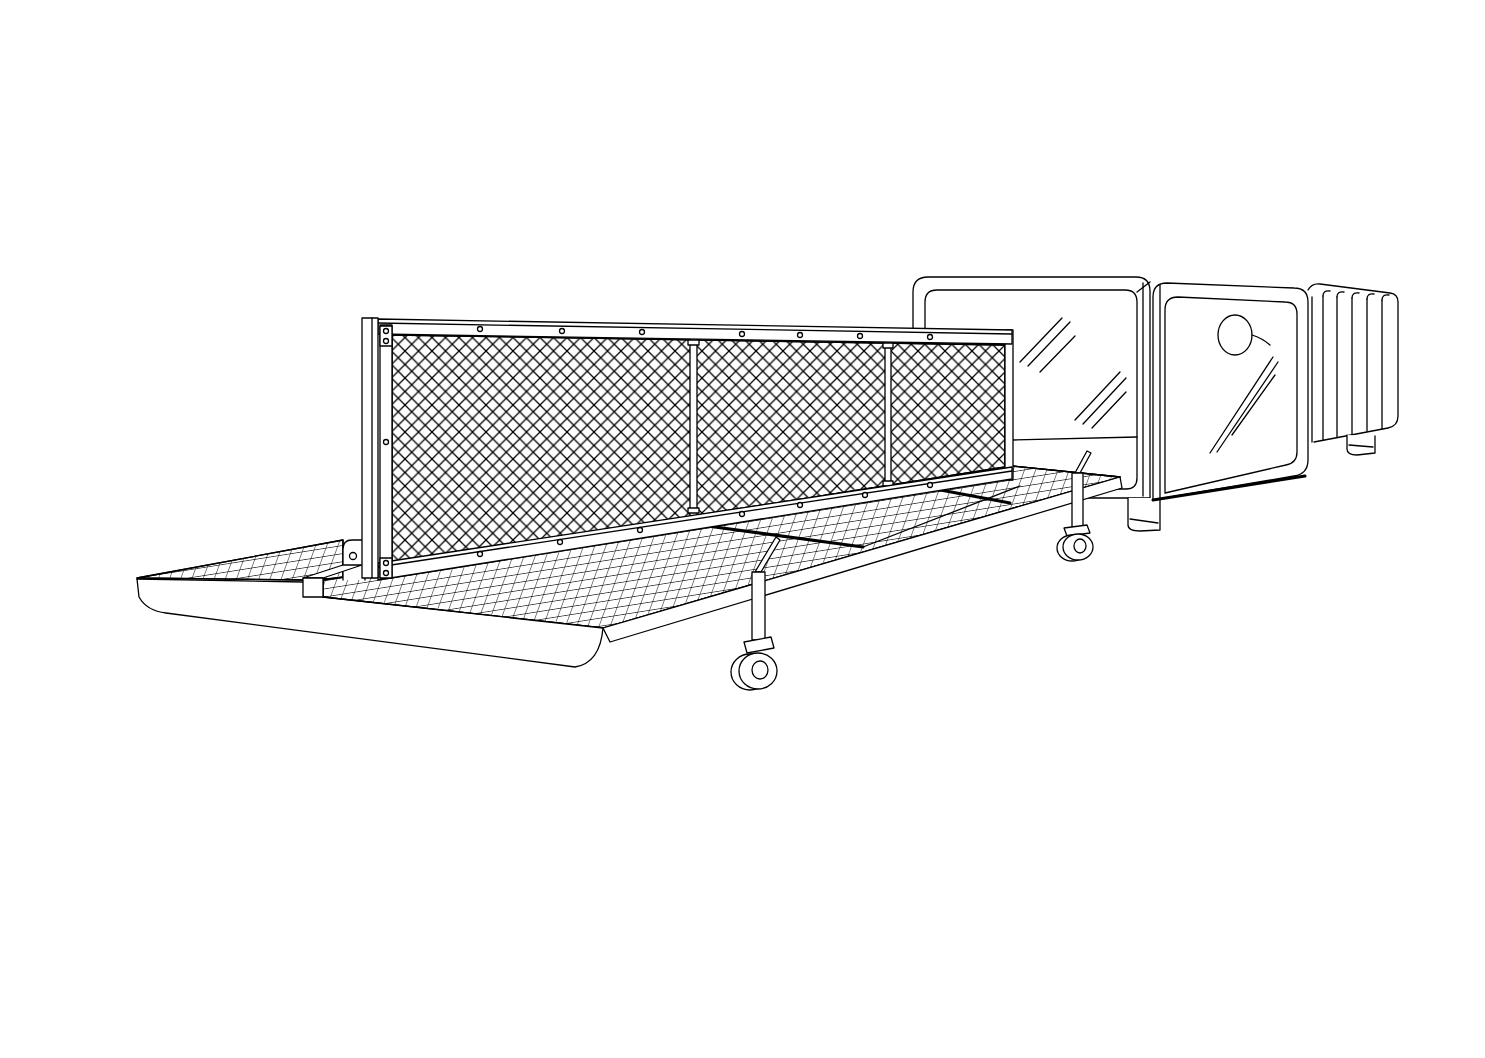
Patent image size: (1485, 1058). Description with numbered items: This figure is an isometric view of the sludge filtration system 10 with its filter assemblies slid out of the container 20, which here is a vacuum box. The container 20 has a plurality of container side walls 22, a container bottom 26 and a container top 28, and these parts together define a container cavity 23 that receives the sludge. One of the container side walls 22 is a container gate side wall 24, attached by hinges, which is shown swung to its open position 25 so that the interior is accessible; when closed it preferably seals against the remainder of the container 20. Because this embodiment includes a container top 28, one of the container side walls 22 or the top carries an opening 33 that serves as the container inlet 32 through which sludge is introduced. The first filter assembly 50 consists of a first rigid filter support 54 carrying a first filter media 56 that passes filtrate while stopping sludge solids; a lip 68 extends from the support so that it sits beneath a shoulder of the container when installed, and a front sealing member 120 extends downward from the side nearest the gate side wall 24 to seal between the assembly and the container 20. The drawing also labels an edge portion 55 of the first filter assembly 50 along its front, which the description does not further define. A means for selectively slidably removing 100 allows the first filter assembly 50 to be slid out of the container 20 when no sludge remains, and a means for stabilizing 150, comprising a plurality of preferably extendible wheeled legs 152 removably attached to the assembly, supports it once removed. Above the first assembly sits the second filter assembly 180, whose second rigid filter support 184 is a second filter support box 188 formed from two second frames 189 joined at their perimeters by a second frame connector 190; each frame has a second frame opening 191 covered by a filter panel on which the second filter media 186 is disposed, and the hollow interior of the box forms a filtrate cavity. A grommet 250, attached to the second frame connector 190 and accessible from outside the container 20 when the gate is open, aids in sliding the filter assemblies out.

The Sludge Filtration System 10 is at (882, 203).
The container 20 is at (1240, 270).
The container side walls 22 is at (915, 292).
The container cavity 23 is at (1122, 350).
The container gate side wall 24 is at (1243, 473).
The open position 25 is at (1345, 552).
The container bottom 26 is at (1333, 445).
The container top 28 is at (1150, 285).
The container inlet 32 is at (1247, 328).
The opening 33 is at (1257, 335).
The first filter assembly 50 is at (208, 545).
The first rigid filter support 54 is at (612, 682).
The platform front edge 55 is at (640, 633).
The first filter media 56 is at (513, 600).
The lip 68 is at (687, 613).
The means for selectively slidably removing 100 is at (1019, 567).
The front sealing member 120 is at (297, 613).
The means for stabilizing 150 is at (905, 764).
The wheeled legs 152 is at (791, 698).
The second filter assembly 180 is at (358, 284).
The second rigid filter support 184 is at (425, 300).
The second filter media 186 is at (603, 358).
The second filter support box 188 is at (356, 383).
The second frames 189 is at (400, 327).
The second frame connector 190 is at (368, 407).
The second frame opening 191 is at (387, 362).
The grommet 250 is at (346, 538).